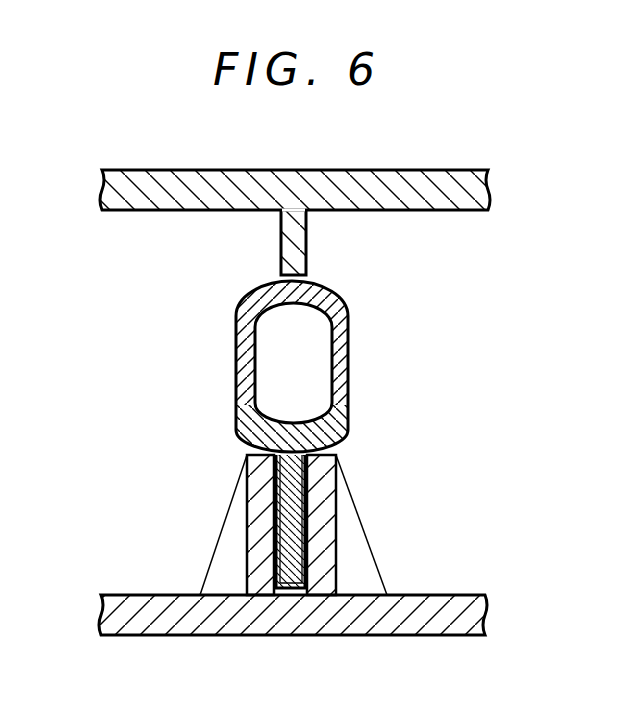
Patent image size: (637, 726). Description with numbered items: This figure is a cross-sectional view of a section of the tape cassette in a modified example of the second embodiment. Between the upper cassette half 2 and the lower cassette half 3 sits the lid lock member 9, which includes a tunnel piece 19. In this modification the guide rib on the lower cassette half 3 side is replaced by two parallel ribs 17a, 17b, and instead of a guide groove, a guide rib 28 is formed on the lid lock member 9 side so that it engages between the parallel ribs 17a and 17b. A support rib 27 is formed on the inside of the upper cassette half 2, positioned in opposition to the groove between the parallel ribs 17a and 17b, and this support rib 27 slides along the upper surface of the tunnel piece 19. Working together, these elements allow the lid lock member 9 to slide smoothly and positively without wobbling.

The upper cassette half 2 is at (151, 177).
The lower cassette half 3 is at (130, 620).
The lid lock member 9 is at (288, 366).
The parallel rib 17a is at (258, 524).
The parallel rib 17b is at (330, 528).
The tunnel piece 19 is at (340, 345).
The support rib 27 is at (297, 232).
The guide rib 28 is at (292, 578).